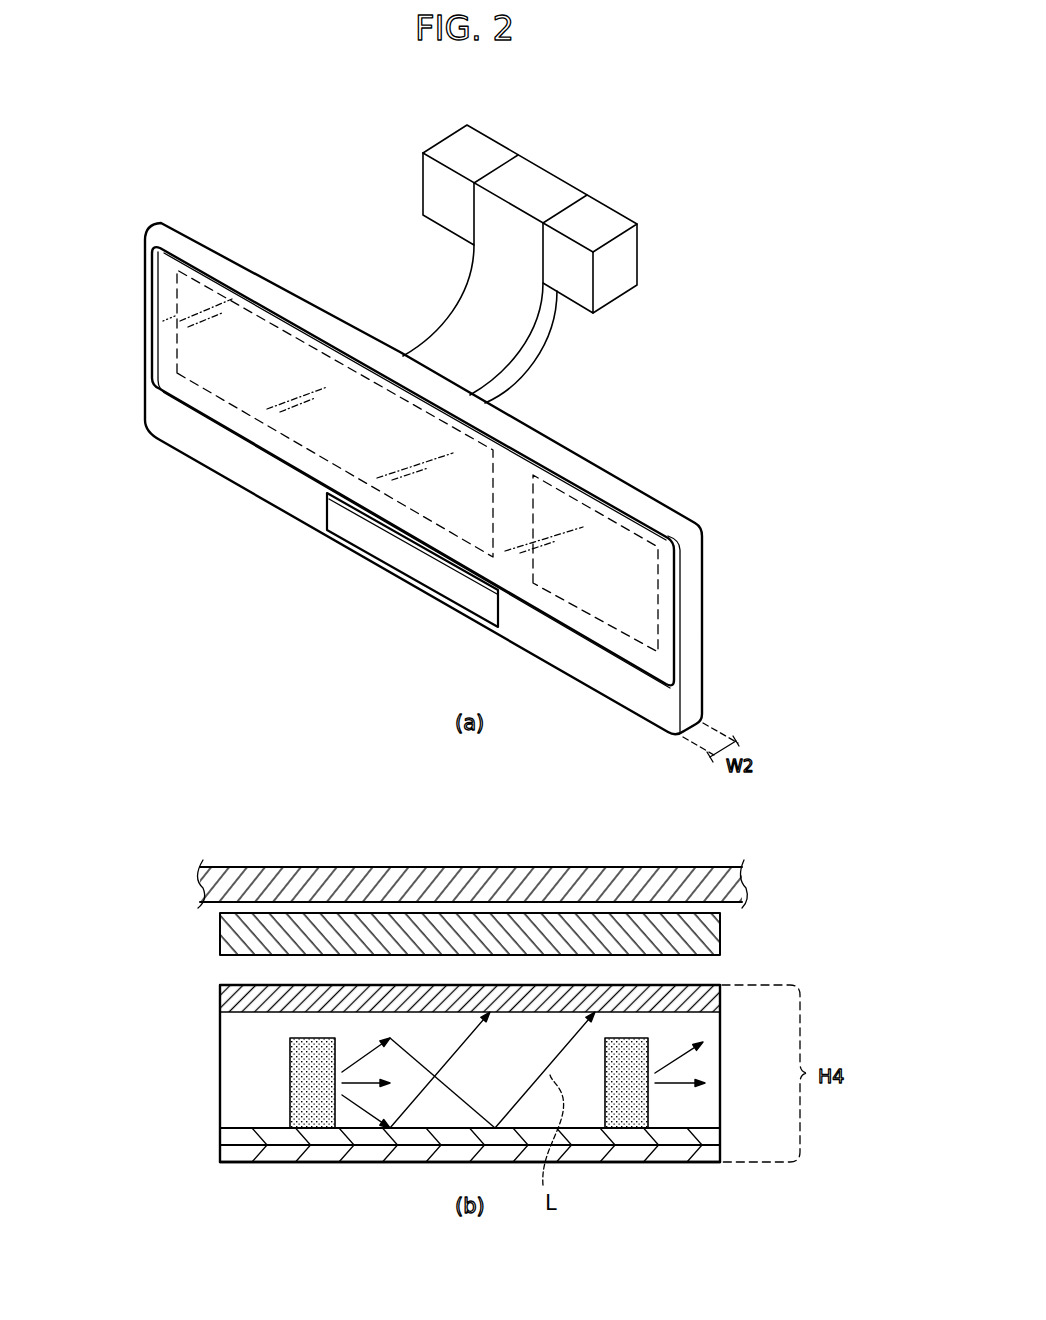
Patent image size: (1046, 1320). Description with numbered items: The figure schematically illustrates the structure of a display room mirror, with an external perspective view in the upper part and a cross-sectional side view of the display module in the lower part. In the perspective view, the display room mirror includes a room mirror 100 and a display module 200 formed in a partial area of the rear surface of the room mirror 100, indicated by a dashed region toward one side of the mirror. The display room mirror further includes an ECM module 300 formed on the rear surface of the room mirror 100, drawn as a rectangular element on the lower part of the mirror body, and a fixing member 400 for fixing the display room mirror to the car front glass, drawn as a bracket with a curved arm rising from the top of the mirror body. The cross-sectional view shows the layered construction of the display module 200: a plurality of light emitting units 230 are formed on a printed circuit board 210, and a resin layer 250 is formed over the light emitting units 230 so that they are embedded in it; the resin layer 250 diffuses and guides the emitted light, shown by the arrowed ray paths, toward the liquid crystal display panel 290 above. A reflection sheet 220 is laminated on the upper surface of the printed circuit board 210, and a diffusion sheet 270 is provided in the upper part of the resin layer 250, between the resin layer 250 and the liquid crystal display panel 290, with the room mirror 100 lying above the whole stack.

The room mirror 100 is at (163, 340).
The display module 200 is at (612, 492).
The ECM module 300 is at (330, 436).
The fixing member 400 is at (473, 318).
The liquid crystal display panel 290 is at (723, 938).
The diffusion sheet 270 is at (707, 1013).
The resin layer 250 is at (233, 1043).
The light emitting units 230 is at (290, 1097).
The reflection sheet 220 is at (703, 1117).
The printed circuit board 210 is at (708, 1140).